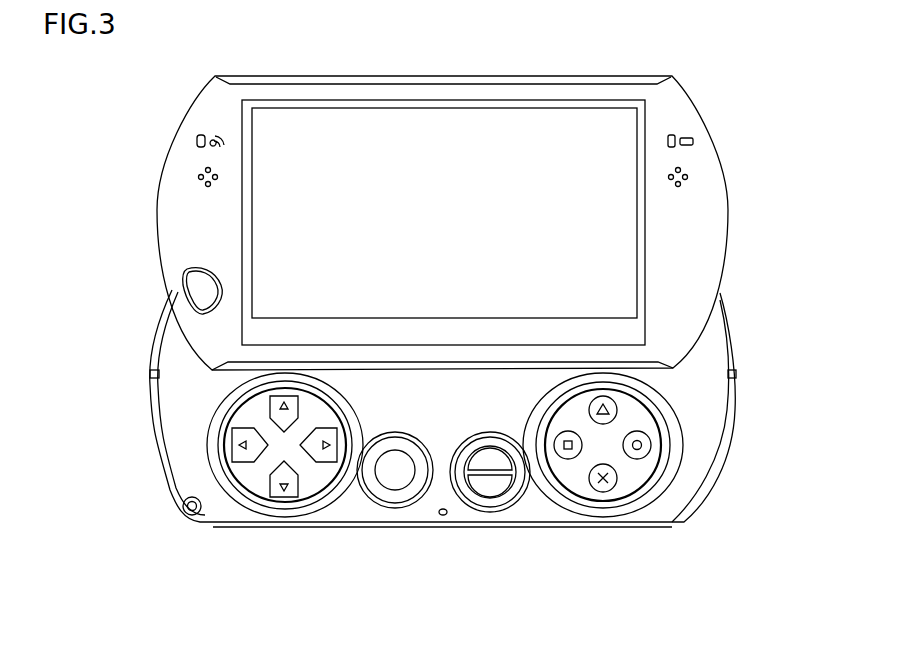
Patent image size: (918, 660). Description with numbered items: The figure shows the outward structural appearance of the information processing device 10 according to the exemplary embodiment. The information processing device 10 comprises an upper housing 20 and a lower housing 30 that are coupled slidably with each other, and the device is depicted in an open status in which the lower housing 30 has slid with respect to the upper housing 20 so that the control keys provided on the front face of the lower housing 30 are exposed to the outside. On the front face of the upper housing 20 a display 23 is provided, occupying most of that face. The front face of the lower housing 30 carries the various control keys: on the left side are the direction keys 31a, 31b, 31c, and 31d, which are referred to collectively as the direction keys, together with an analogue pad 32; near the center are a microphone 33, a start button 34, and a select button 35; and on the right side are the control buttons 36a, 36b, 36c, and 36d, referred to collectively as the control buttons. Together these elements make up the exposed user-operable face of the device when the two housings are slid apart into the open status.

The information processing device 10 is at (456, 631).
The upper housing 20 is at (672, 102).
The display 23 is at (617, 228).
The lower housing 30 is at (707, 357).
The direction key 31a is at (276, 408).
The direction key 31b is at (247, 445).
The direction key 31c is at (278, 478).
The direction key 31d is at (320, 455).
The analogue pad 32 is at (395, 478).
The microphone 33 is at (440, 517).
The start button 34 is at (490, 493).
The select button 35 is at (512, 463).
The control button 36a is at (613, 410).
The control button 36b is at (640, 443).
The control button 36c is at (568, 459).
The control button 36d is at (613, 477).